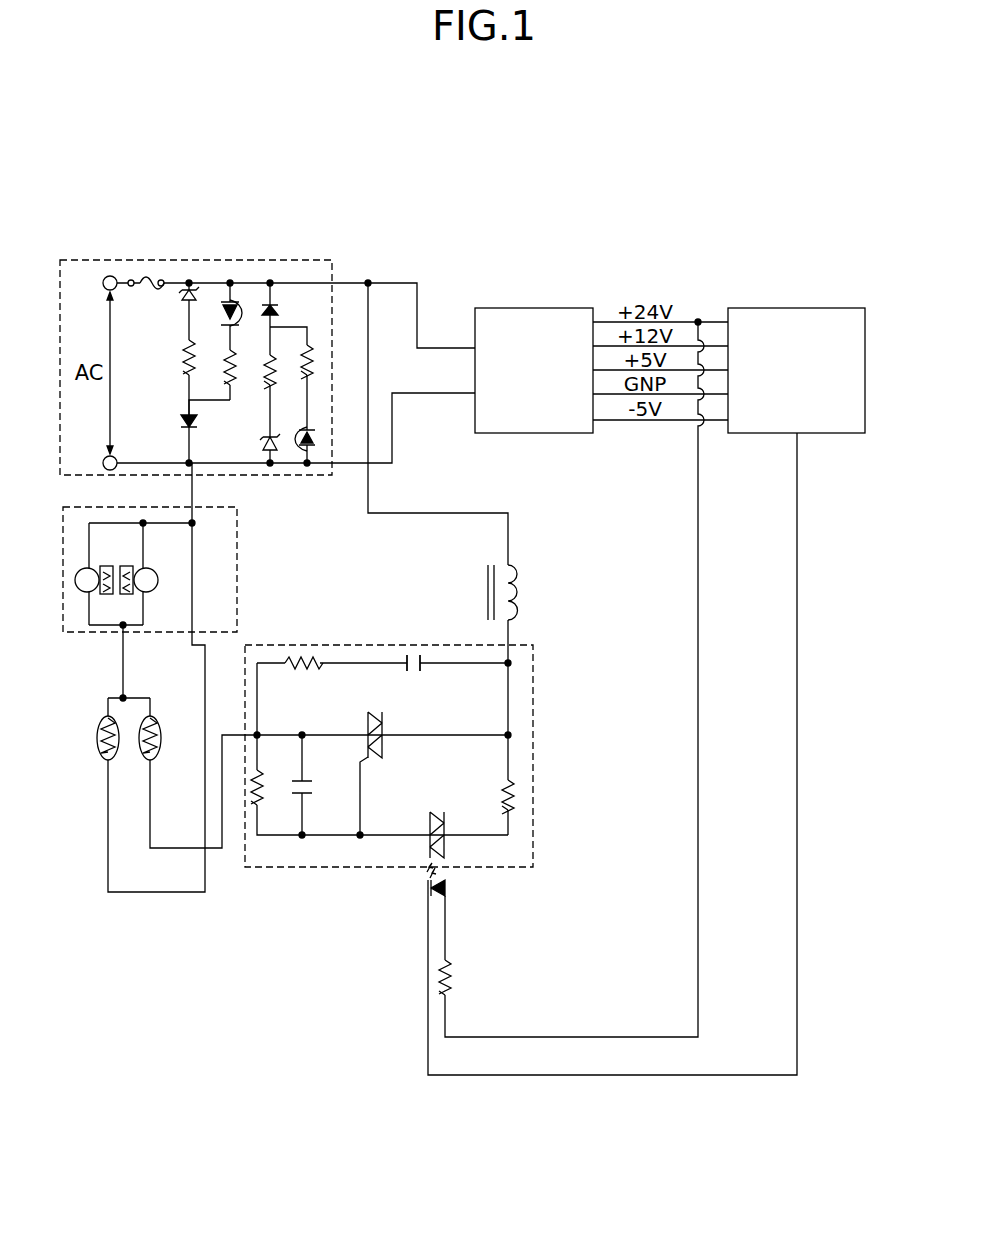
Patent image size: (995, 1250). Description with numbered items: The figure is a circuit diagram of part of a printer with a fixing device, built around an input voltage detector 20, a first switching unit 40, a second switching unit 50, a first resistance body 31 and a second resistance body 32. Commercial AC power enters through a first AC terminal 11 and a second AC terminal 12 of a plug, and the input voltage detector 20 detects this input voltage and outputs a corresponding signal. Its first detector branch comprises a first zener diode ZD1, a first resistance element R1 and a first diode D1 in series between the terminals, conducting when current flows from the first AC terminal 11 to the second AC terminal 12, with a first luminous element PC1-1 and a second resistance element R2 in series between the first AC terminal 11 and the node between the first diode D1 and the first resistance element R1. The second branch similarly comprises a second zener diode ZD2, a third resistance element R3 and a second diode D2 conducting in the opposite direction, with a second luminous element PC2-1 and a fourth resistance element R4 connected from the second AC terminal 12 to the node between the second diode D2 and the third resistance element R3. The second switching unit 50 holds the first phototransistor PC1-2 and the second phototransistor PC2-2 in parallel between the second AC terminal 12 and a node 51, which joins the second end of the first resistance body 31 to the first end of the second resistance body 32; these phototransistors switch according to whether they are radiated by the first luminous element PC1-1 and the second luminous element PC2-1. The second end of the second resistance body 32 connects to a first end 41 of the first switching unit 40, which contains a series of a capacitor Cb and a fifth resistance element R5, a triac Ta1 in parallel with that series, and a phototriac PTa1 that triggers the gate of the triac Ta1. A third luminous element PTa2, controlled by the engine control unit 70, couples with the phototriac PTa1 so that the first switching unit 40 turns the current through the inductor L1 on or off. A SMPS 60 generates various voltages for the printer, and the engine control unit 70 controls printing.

The first AC terminal 11 is at (127, 282).
The second AC terminal 12 is at (127, 460).
The input voltage detector 20 is at (298, 258).
The first resistance body 31 is at (106, 716).
The second resistance body 32 is at (153, 716).
The first switching unit 40 is at (533, 742).
The first end of the first switching unit 41 is at (258, 738).
The second switching unit 50 is at (237, 566).
The node 51 is at (123, 625).
The SMPS 60 is at (532, 308).
The engine control unit 70 is at (790, 308).
The first zener diode ZD1 is at (171, 282).
The second zener diode ZD2 is at (248, 449).
The first diode D1 is at (205, 426).
The second diode D2 is at (287, 311).
The first resistance element R1 is at (165, 357).
The second resistance element R2 is at (222, 370).
The third resistance element R3 is at (268, 384).
The fourth resistance element R4 is at (304, 385).
The fifth resistance element R5 is at (304, 679).
The capacitor Cb is at (414, 678).
The inductor L1 is at (517, 592).
The first luminous element PC1-1 is at (240, 300).
The first phototransistor PC1-2 is at (83, 566).
The second luminous element PC2-1 is at (318, 440).
The second phototransistor PC2-2 is at (148, 568).
The triac Ta1 is at (395, 734).
The phototriac PTa1 is at (463, 833).
The third luminous element PTa2 is at (463, 882).